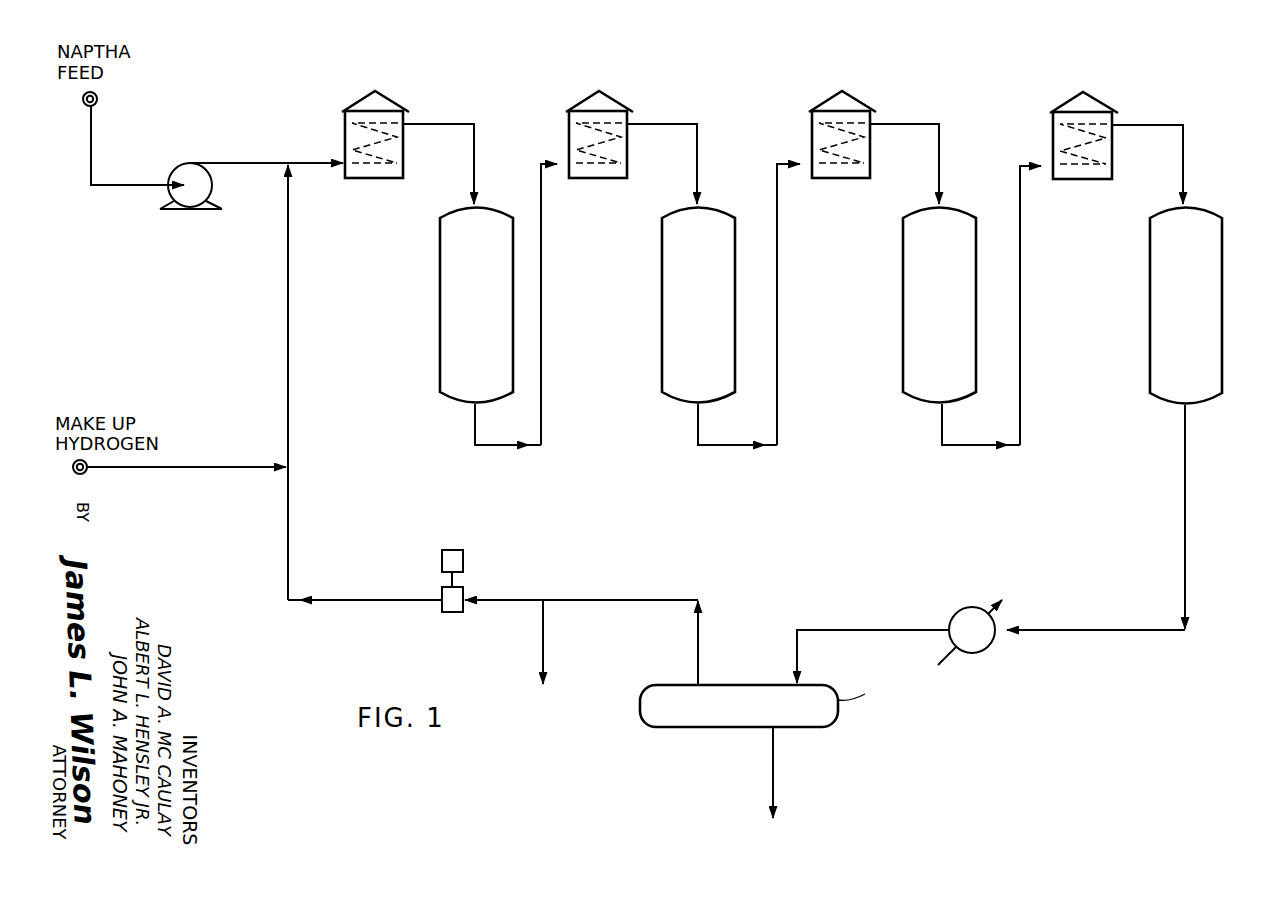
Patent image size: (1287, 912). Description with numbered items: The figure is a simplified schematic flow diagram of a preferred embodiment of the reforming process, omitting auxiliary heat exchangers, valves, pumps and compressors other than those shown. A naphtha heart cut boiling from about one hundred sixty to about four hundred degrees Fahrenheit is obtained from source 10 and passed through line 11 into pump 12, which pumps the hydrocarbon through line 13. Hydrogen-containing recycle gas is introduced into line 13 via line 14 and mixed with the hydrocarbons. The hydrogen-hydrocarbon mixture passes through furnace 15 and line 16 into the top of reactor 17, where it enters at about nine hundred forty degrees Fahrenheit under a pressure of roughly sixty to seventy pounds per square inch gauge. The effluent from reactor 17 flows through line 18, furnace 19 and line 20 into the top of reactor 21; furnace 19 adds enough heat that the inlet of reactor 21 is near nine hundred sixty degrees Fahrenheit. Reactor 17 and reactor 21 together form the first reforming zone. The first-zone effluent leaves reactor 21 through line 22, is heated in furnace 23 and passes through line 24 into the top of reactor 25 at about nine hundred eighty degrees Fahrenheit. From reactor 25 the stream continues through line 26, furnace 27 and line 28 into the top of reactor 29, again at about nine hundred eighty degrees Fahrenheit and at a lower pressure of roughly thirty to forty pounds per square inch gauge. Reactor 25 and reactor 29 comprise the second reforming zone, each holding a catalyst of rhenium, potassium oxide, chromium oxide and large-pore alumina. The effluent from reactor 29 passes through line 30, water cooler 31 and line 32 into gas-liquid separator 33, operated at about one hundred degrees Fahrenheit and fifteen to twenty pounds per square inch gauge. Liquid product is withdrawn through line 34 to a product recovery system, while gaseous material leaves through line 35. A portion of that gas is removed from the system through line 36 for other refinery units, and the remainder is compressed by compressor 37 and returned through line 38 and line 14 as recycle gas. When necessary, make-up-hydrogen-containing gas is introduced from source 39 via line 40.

The source 10 is at (98, 98).
The line 11 is at (119, 185).
The pump 12 is at (213, 191).
The line 13 is at (246, 163).
The line 14 is at (288, 350).
The furnace 15 is at (378, 92).
The line 16 is at (455, 124).
The reactor 17 is at (486, 240).
The line 18 is at (541, 290).
The furnace 19 is at (605, 92).
The line 20 is at (656, 124).
The reactor 21 is at (708, 240).
The line 22 is at (777, 290).
The furnace 23 is at (848, 92).
The line 24 is at (895, 124).
The reactor 25 is at (949, 240).
The line 26 is at (1020, 290).
The furnace 27 is at (1090, 92).
The line 28 is at (1183, 149).
The reactor 29 is at (1196, 240).
The line 30 is at (1185, 497).
The water cooler 31 is at (965, 607).
The line 32 is at (818, 630).
The gas-liquid separator 33 is at (738, 721).
The line 34 is at (773, 778).
The line 35 is at (545, 600).
The line 36 is at (543, 645).
The compressor 37 is at (463, 561).
The line 38 is at (345, 600).
The source 39 is at (82, 474).
The line 40 is at (205, 467).